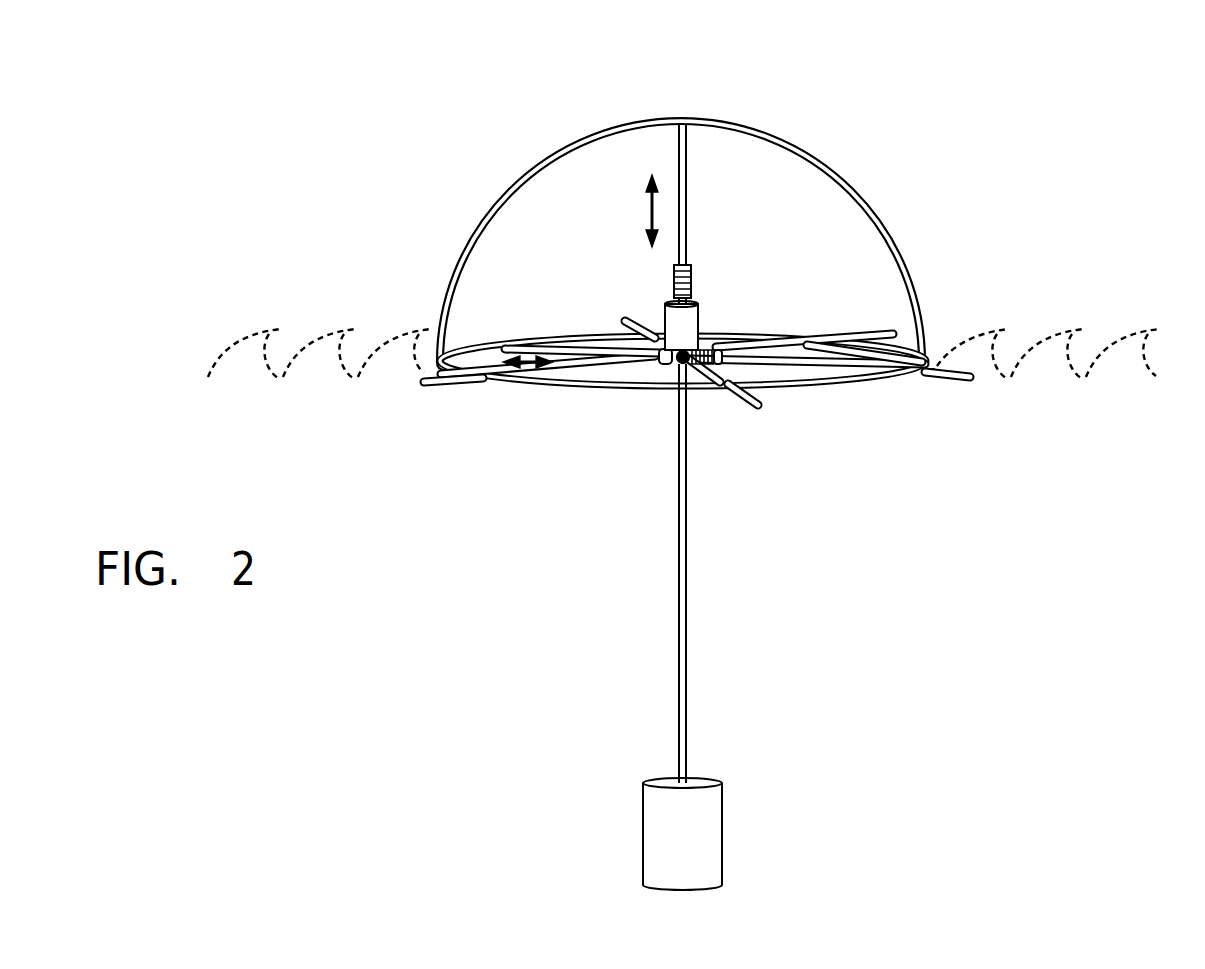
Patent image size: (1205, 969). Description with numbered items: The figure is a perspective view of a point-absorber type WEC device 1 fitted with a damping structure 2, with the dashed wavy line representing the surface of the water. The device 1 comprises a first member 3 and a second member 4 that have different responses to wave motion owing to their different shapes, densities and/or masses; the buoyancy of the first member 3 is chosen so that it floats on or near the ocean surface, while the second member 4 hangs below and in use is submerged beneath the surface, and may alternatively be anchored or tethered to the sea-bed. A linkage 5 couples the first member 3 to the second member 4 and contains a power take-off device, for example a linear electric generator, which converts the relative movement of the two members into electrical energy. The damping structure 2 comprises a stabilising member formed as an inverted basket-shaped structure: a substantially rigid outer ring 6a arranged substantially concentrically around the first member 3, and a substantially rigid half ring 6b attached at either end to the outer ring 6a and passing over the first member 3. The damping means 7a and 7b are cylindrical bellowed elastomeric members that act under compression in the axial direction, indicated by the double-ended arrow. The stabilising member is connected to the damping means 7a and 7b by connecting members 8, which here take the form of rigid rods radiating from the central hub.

The WEC device 1 is at (551, 104).
The damping structure 2 is at (855, 398).
The first member 3 is at (672, 318).
The second member 4 is at (706, 815).
The linkage 5 is at (685, 548).
The outer ring 6a is at (575, 390).
The half ring 6b is at (492, 210).
The damping means 7a is at (690, 272).
The damping means 7b is at (708, 346).
The connecting members 8 is at (563, 346).